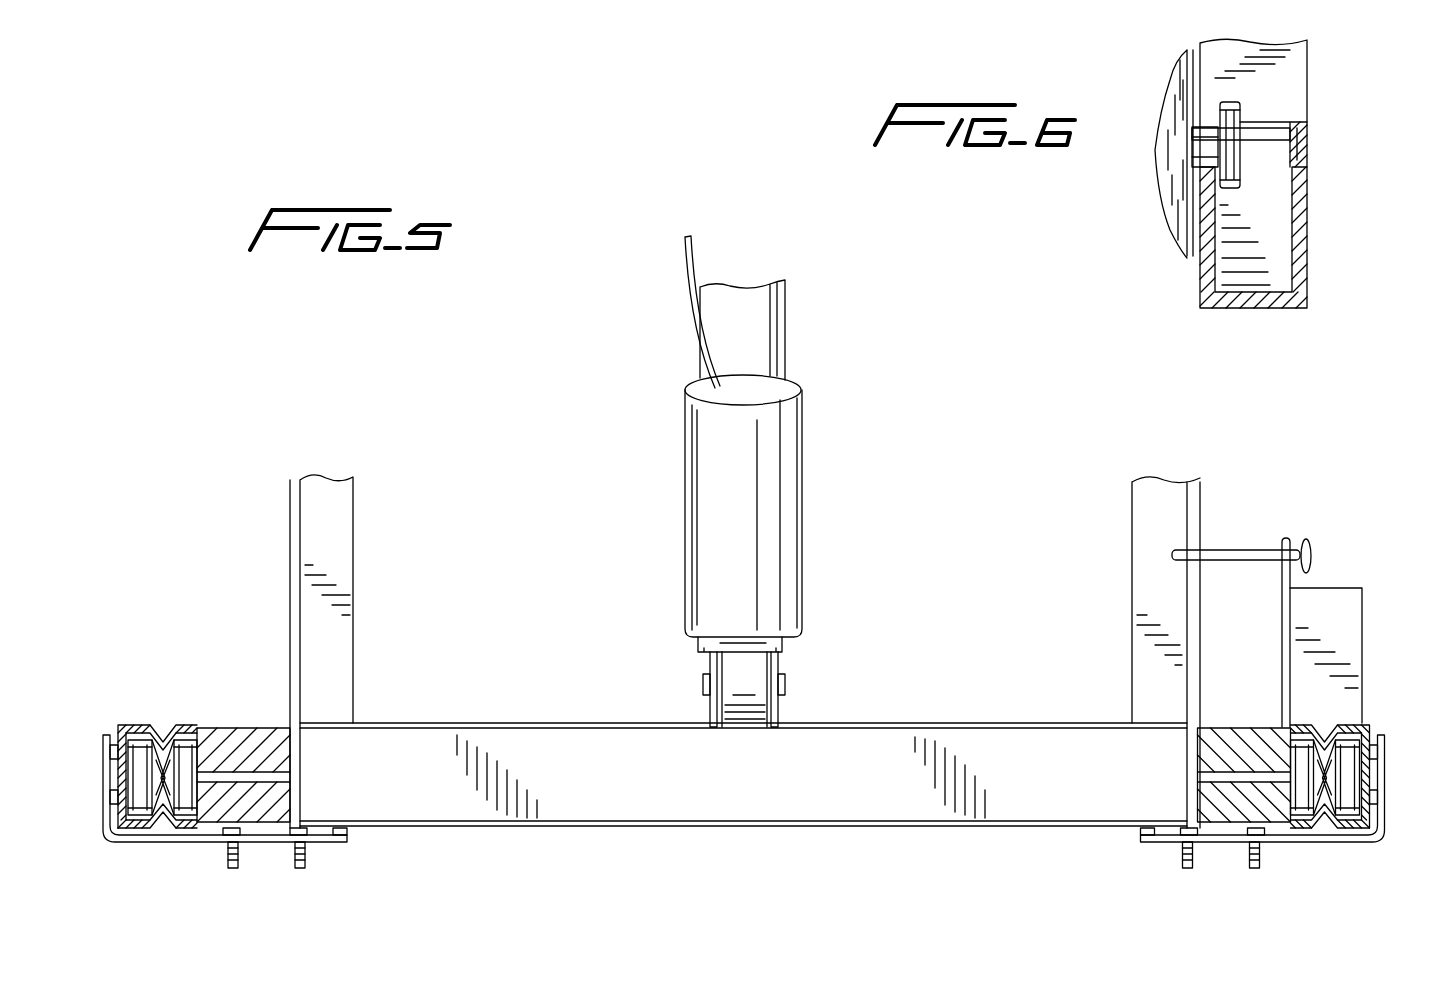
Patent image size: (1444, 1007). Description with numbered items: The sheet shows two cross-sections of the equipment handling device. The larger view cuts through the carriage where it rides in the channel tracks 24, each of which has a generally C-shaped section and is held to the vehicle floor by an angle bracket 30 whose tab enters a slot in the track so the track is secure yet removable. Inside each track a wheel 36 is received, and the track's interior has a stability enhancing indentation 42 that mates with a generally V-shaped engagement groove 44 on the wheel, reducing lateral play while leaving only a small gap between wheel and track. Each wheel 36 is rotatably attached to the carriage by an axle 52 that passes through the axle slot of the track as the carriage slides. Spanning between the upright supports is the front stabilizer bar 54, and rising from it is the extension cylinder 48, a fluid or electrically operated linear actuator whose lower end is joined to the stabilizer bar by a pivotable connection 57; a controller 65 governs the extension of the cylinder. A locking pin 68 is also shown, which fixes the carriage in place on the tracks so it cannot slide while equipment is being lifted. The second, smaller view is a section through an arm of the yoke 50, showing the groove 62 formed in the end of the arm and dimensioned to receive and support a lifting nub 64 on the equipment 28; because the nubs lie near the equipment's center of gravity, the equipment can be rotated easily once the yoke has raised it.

In FIG. 5, the channel track 24 is at (130, 732).
In FIG. 5, the angle bracket 30 is at (136, 840).
In FIG. 5, the wheel 36 is at (190, 740).
In FIG. 5, the stability enhancing indentation 42 is at (161, 818).
In FIG. 5, the engagement groove 44 is at (160, 760).
In FIG. 5, the extension cylinder 48 is at (803, 421).
In FIG. 5, the axle 52 is at (246, 770).
In FIG. 5, the front stabilizer bar 54 is at (999, 740).
In FIG. 5, the pivotable connection 57 is at (779, 680).
In FIG. 5, the controller 65 is at (688, 262).
In FIG. 5, the locking pin 68 is at (1305, 540).
In FIG. 6, the equipment 28 is at (1170, 197).
In FIG. 6, the yoke 50 is at (1299, 250).
In FIG. 6, the groove 62 is at (1303, 135).
In FIG. 6, the lifting nub 64 is at (1212, 138).